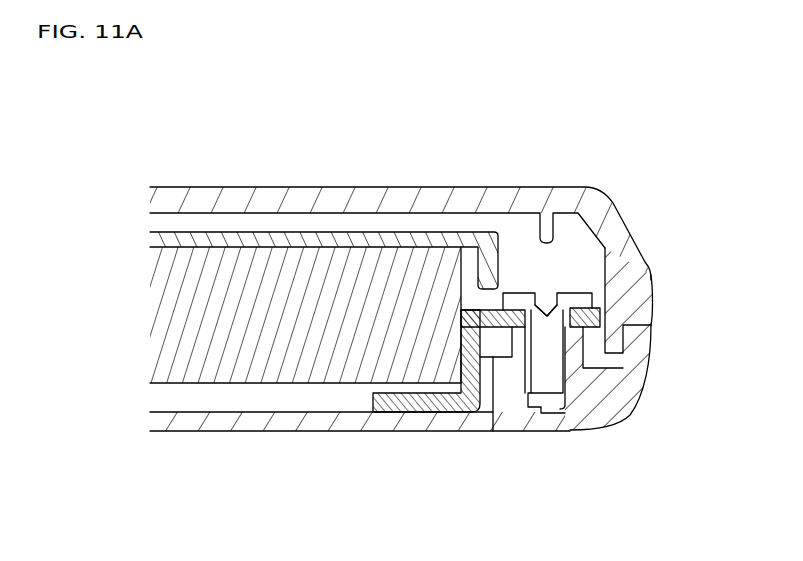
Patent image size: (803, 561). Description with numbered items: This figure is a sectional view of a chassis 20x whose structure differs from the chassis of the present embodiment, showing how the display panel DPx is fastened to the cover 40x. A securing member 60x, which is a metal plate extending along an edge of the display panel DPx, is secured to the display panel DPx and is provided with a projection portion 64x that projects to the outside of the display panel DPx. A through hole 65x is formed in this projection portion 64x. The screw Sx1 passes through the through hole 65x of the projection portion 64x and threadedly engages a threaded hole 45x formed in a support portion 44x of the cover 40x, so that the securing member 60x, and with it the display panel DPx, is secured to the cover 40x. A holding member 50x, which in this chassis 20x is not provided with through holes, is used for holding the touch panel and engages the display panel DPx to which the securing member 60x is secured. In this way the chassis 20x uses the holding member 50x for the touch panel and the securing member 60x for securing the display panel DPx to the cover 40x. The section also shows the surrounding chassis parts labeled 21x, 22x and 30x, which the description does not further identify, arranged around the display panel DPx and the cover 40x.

The chassis 20x is at (563, 143).
The cover window 21x is at (372, 187).
The holding member 50x is at (306, 232).
The display panel DPx is at (233, 384).
The bottom cover 22x is at (553, 431).
The securing member 60x is at (373, 395).
The projection portion 64x is at (520, 340).
The threaded hole 45x is at (532, 400).
The through hole 65x is at (575, 292).
The screw Sx1 is at (547, 310).
The housing 30x is at (660, 283).
The cover 40x is at (655, 344).
The support portion 44x is at (591, 398).